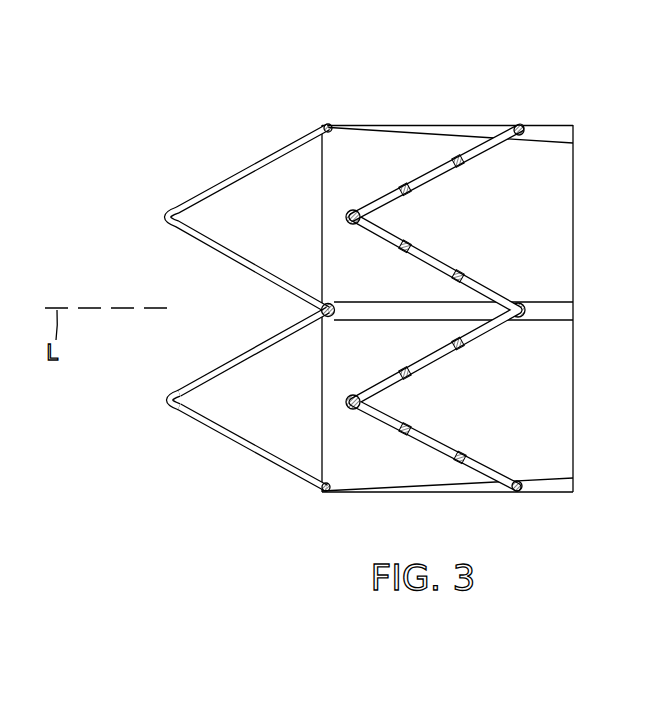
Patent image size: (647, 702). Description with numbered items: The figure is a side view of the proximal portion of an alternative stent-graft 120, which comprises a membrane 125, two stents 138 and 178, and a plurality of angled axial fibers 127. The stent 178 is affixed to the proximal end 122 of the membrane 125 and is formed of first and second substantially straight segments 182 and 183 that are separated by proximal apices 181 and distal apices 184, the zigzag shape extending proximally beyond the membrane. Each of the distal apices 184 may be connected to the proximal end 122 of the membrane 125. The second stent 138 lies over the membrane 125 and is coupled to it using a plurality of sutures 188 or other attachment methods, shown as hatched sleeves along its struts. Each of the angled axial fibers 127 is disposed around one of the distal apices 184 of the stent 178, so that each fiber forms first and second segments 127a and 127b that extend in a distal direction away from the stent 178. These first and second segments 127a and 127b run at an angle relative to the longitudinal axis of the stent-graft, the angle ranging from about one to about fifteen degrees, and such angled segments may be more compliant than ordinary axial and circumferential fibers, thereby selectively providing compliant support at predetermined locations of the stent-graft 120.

The stent-graft 120 is at (343, 103).
The proximal end 122 is at (335, 475).
The membrane 125 is at (541, 203).
The angled axial fibers 127 is at (540, 297).
The first segment 127a is at (560, 303).
The second segment 127b is at (543, 140).
The stent 138 is at (433, 160).
The stent 178 is at (236, 166).
The proximal apices 181 is at (168, 400).
The first substantially straight segment 182 is at (233, 362).
The second substantially straight segment 183 is at (227, 435).
The distal apices 184 is at (317, 487).
The sutures 188 is at (349, 407).